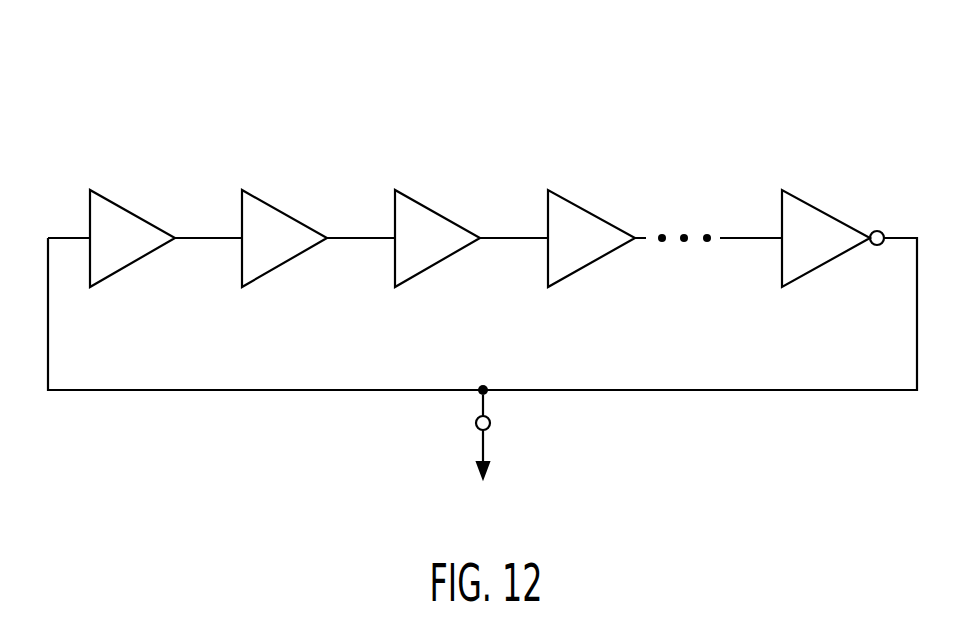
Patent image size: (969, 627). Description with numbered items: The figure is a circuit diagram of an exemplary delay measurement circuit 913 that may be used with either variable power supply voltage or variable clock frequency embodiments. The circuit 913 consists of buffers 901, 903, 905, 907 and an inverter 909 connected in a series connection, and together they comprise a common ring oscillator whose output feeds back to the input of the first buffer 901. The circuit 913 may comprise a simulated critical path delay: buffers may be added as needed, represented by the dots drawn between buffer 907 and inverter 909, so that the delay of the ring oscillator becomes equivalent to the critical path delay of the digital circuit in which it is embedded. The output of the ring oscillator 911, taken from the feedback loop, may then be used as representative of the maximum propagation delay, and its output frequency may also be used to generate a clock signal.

The buffer 901 is at (123, 220).
The buffer 903 is at (270, 220).
The buffer 905 is at (417, 220).
The buffer 907 is at (565, 220).
The inverter 909 is at (813, 219).
The output of the ring oscillator 911 is at (490, 424).
The delay measurement circuit 913 is at (505, 98).